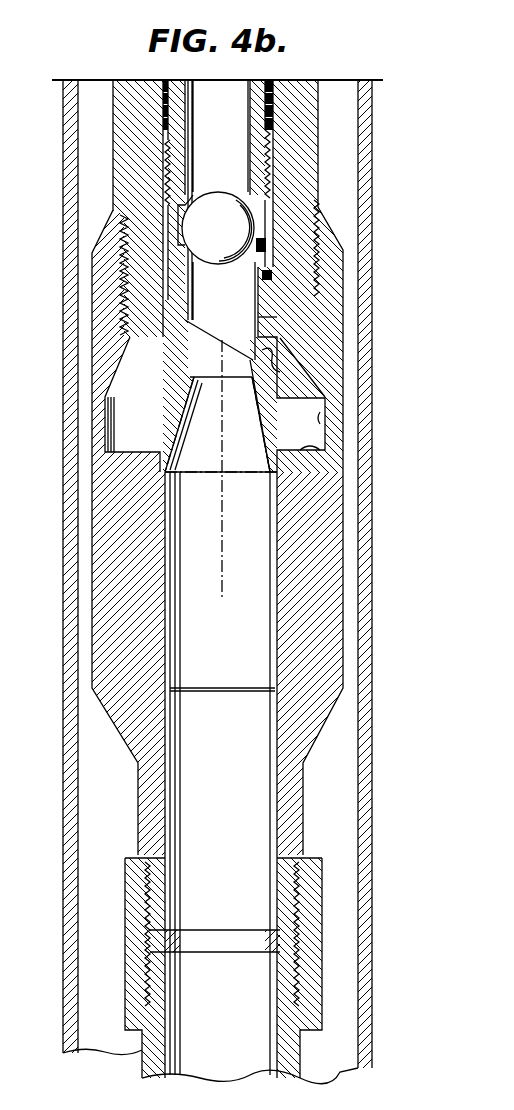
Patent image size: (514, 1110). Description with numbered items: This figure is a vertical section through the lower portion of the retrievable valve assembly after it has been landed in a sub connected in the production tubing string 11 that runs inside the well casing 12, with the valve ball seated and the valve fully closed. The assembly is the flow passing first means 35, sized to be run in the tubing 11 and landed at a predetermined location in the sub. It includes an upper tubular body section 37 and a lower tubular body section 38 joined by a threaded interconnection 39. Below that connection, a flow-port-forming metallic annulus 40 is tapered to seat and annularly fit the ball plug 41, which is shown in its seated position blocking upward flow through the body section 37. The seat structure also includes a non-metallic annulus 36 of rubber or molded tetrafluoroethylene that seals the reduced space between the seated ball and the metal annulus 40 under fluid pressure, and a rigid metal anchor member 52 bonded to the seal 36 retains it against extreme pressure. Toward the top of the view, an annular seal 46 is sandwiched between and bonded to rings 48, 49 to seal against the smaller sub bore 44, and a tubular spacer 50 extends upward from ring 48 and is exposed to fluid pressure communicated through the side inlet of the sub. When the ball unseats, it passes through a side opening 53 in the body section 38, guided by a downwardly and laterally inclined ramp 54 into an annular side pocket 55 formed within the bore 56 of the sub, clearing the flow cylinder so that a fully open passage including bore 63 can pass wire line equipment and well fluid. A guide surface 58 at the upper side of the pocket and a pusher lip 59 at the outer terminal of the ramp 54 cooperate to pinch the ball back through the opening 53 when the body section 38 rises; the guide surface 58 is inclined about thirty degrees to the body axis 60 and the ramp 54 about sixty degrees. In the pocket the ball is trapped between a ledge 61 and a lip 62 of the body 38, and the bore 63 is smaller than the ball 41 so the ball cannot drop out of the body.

The production tubing string 11 is at (300, 1058).
The well casing 12 is at (360, 790).
The flow passing first means 35 is at (290, 177).
The non-metallic annulus 36 is at (260, 222).
The upper tubular body section 37 is at (255, 133).
The lower tubular body section 38 is at (163, 295).
The threaded interconnection 39 is at (172, 182).
The metallic annulus 40 is at (196, 207).
The ball plug 41 is at (218, 228).
The smaller sub bore 44 is at (275, 145).
The annular seal 46 is at (160, 110).
The ring 48 is at (160, 100).
The ring 49 is at (160, 122).
The tubular spacer 50 is at (163, 80).
The rigid anchor member 52 is at (262, 245).
The side opening 53 is at (265, 322).
The ramp 54 is at (212, 330).
The side pocket 55 is at (322, 418).
The bore of the sub 56 is at (275, 640).
The guide surface 58 is at (300, 355).
The pusher lip 59 is at (274, 360).
The body axis 60 is at (222, 465).
The ledge 61 is at (315, 448).
The lip 62 is at (270, 275).
The bore 63 is at (221, 362).